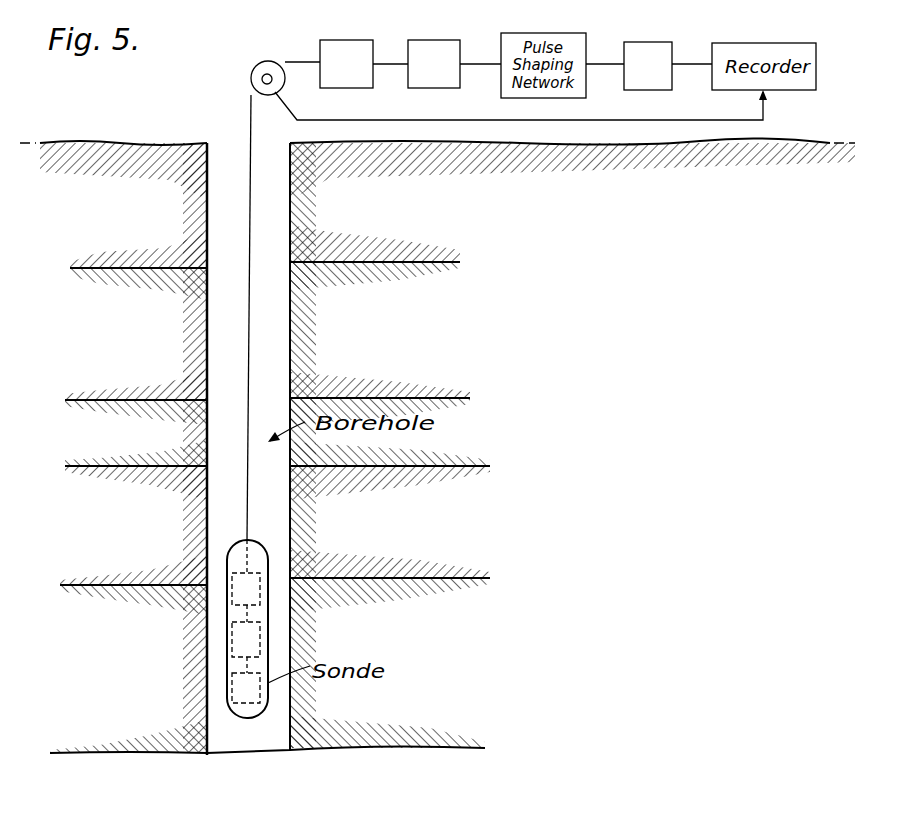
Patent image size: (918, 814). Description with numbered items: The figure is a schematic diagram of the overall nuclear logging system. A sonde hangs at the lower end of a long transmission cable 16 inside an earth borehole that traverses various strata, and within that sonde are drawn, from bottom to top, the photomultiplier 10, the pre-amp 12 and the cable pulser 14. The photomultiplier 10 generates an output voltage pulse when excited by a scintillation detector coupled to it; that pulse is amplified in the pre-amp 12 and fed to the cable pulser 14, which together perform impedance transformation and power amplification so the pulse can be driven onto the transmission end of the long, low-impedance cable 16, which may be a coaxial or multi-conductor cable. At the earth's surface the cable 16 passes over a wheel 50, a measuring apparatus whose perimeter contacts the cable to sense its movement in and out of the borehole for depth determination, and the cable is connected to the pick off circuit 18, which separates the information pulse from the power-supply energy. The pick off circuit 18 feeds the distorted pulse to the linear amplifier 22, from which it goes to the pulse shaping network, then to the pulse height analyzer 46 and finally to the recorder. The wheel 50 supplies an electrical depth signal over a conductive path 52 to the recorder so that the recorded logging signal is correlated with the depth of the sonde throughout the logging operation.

The photomultiplier 10 is at (232, 683).
The pre-amp 12 is at (232, 640).
The cable pulser 14 is at (255, 582).
The transmission cable 16 is at (250, 322).
The pick off circuit 18 is at (346, 64).
The linear amplifier 22 is at (434, 64).
The pulse height analyzer 46 is at (648, 66).
The wheel 50 is at (262, 63).
The conductive path 52 is at (712, 104).